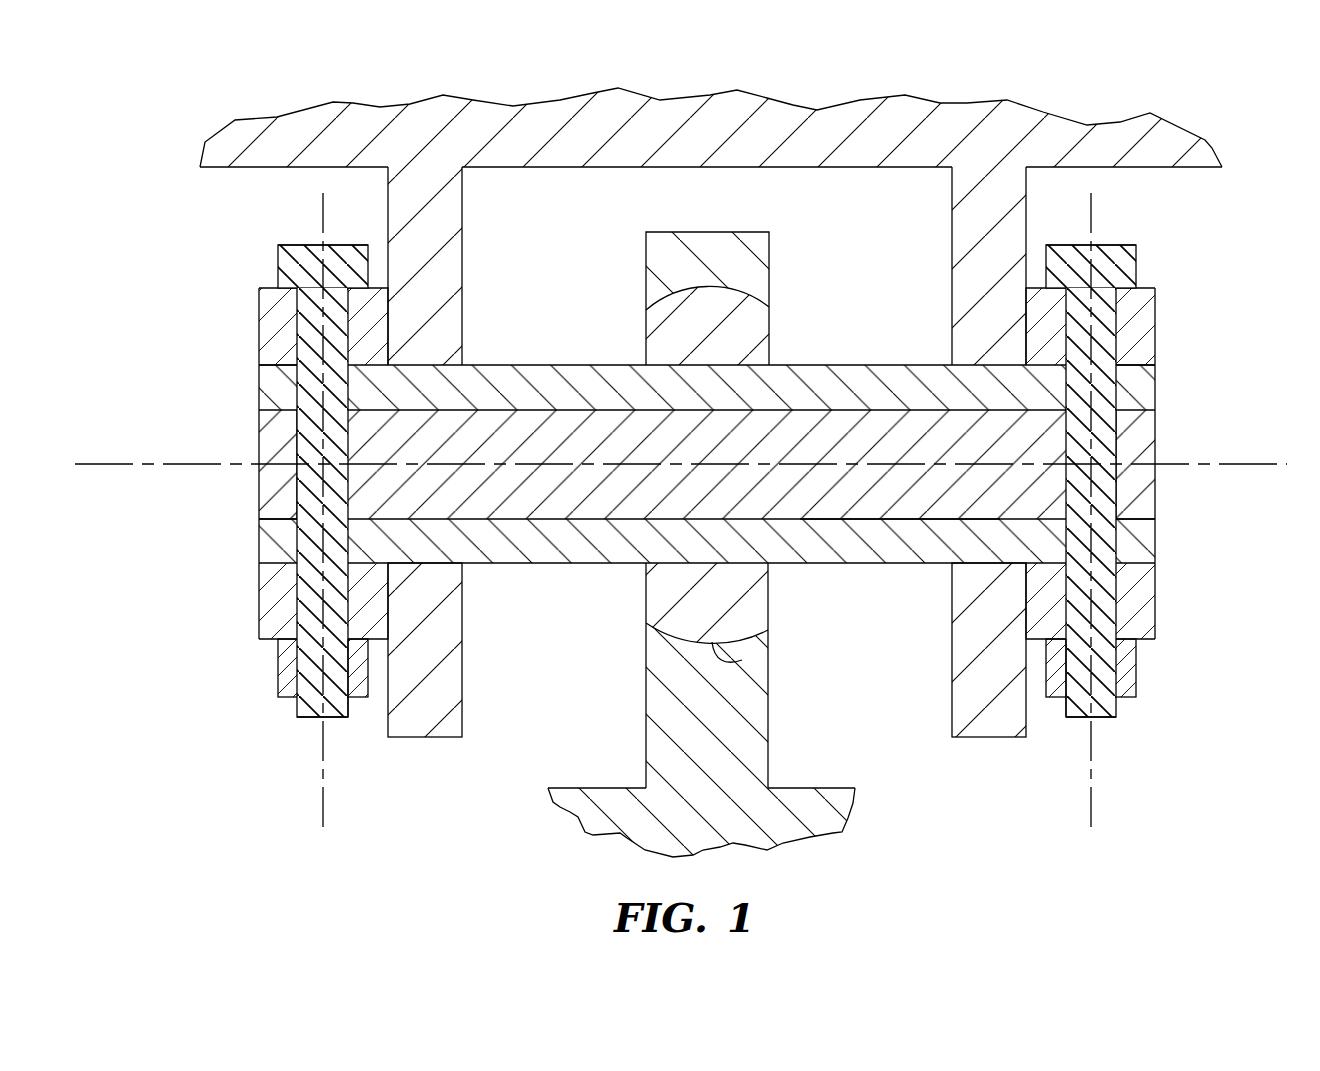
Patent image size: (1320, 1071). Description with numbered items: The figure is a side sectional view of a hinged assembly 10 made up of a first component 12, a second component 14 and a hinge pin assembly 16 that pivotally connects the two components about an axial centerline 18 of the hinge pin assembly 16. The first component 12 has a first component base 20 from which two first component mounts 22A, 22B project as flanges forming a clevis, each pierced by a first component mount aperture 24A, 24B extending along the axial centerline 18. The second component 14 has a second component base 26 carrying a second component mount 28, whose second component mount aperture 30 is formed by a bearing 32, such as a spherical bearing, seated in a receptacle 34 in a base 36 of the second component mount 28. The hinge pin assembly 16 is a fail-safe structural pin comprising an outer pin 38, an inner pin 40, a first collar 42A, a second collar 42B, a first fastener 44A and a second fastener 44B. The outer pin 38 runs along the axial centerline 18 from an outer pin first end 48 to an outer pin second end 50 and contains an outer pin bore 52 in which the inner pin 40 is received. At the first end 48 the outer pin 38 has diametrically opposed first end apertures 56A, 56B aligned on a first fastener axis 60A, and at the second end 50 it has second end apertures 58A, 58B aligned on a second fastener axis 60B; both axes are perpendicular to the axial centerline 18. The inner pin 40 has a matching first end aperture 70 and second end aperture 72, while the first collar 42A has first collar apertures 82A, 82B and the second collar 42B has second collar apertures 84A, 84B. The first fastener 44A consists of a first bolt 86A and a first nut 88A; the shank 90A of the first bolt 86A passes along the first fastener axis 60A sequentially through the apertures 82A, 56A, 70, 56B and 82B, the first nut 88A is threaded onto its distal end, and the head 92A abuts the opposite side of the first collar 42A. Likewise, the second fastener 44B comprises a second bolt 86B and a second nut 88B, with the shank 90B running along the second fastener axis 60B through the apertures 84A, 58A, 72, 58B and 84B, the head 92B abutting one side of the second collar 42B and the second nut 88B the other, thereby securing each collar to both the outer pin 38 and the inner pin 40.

The hinged assembly 10 is at (150, 145).
The first component 12 is at (1180, 130).
The second component 14 is at (855, 828).
The hinge pin assembly 16 is at (203, 633).
The axial centerline 18 is at (1277, 468).
The first component base 20 is at (288, 114).
The first component mount 22A is at (462, 228).
The first component mount 22B is at (952, 205).
The first component mount aperture 24A is at (440, 365).
The first component mount aperture 24B is at (952, 360).
The second component base 26 is at (563, 806).
The second component mount 28 is at (772, 713).
The second component mount aperture 30 is at (722, 565).
The bearing 32 is at (646, 590).
The receptacle 34 is at (742, 658).
The base 36 is at (646, 708).
The outer pin 38 is at (255, 554).
The inner pin 40 is at (256, 498).
The first collar 42A is at (258, 620).
The second collar 42B is at (1158, 620).
The first fastener 44A is at (281, 709).
The second fastener 44B is at (1136, 713).
The outer pin first end 48 is at (262, 392).
The outer pin second end 50 is at (1160, 390).
The outer pin bore 52 is at (903, 522).
The first end aperture 56A is at (295, 388).
The first end aperture 56B is at (262, 530).
The second end aperture 58A is at (1153, 388).
The second end aperture 58B is at (1118, 543).
The first fastener axis 60A is at (323, 800).
The second fastener axis 60B is at (1091, 800).
The first end aperture 70 is at (292, 436).
The second end aperture 72 is at (1118, 440).
The first collar aperture 82A is at (290, 335).
The first collar aperture 82B is at (272, 598).
The second collar aperture 84A is at (1125, 335).
The second collar aperture 84B is at (1118, 587).
The first bolt 86A is at (275, 262).
The second bolt 86B is at (1139, 262).
The first nut 88A is at (353, 700).
The second nut 88B is at (1060, 700).
The shank 90A is at (300, 478).
The shank 90B is at (1118, 487).
The head 92A is at (300, 243).
The head 92B is at (1115, 243).